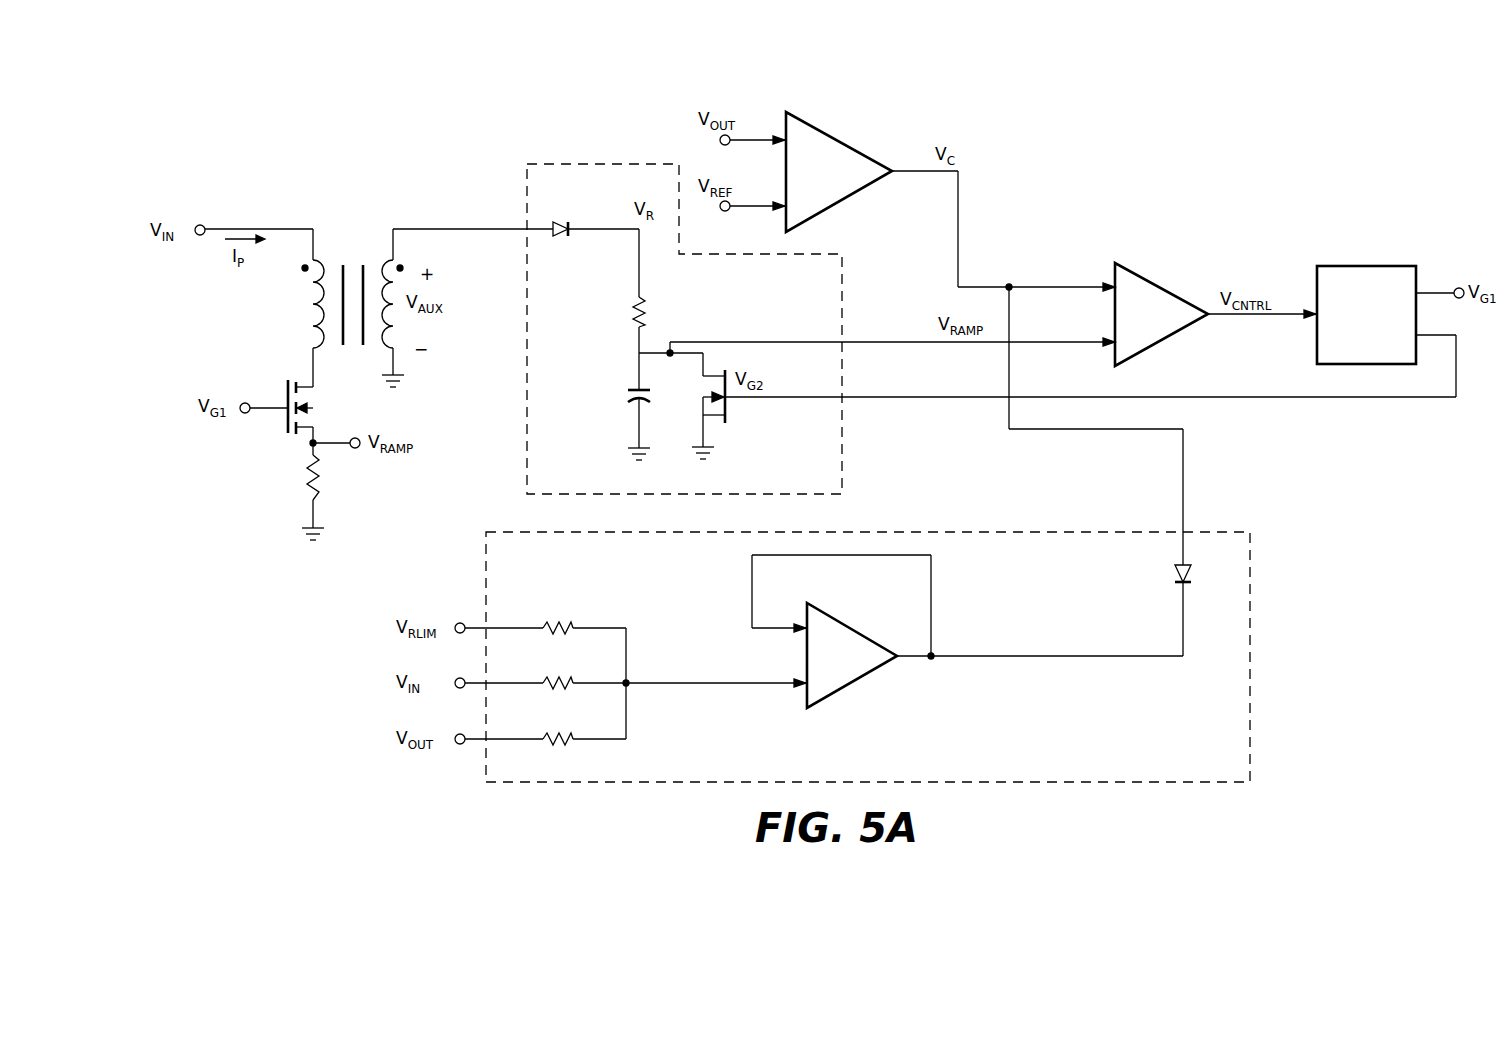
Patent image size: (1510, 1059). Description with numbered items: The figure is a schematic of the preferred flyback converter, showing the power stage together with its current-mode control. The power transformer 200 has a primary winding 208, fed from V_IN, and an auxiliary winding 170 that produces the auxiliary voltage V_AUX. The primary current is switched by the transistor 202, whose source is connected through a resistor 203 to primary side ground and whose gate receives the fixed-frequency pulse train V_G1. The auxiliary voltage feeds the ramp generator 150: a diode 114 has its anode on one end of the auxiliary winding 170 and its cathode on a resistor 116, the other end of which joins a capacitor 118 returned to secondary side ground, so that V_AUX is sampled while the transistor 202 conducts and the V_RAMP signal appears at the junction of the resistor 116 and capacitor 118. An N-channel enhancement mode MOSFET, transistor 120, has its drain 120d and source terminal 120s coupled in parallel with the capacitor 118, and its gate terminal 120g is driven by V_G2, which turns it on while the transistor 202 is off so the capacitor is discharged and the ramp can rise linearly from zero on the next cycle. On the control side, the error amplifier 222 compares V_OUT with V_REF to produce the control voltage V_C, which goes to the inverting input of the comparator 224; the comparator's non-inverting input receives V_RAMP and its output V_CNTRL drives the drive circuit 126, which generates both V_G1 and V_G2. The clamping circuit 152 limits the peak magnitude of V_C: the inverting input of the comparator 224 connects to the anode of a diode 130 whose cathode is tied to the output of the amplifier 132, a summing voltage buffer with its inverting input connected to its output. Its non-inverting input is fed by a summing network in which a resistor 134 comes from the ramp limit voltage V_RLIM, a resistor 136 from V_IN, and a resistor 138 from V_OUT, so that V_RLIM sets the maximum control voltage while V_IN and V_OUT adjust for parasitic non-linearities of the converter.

The power transformer 200 is at (355, 290).
The primary winding 208 is at (313, 310).
The auxiliary winding 170 is at (396, 335).
The transistor 202 is at (282, 418).
The resistor 203 is at (318, 470).
The ramp generator 150 is at (527, 352).
The diode 114 is at (560, 222).
The resistor 116 is at (642, 308).
The capacitor 118 is at (628, 396).
The transistor 120 is at (727, 405).
The drain terminal 120d is at (693, 343).
The source terminal 120s is at (705, 432).
The gate terminal 120g is at (862, 398).
The error amplifier 222 is at (845, 140).
The comparator 224 is at (1150, 284).
The drive circuit 126 is at (1400, 266).
The clamping circuit 152 is at (1250, 613).
The diode 130 is at (1174, 574).
The amplifier 132 is at (858, 680).
The resistor 134 is at (548, 622).
The resistor 136 is at (550, 674).
The resistor 138 is at (564, 730).